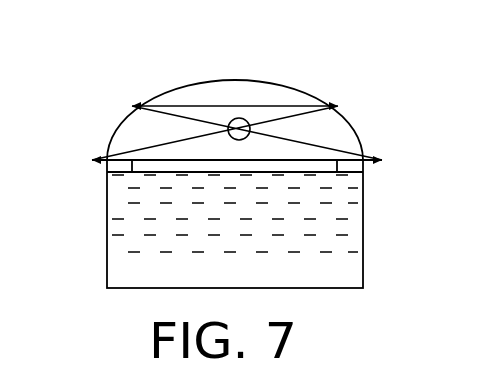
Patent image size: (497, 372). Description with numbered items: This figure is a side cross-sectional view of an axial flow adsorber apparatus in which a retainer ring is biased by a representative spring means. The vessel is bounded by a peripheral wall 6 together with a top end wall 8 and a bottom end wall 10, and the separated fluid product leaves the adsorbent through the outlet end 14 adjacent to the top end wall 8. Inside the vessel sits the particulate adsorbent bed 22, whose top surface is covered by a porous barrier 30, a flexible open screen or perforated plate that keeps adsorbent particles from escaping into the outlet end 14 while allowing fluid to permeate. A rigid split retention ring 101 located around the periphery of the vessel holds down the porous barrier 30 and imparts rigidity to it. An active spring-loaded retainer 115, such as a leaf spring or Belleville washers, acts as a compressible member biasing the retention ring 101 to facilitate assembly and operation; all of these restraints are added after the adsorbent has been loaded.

The bottom end wall 10 is at (345, 288).
The outlet end 14 is at (271, 93).
The rigid split retention ring 101 is at (100, 169).
The porous barrier 30 is at (143, 169).
The top end wall 8 is at (168, 92).
The spring-loaded retainer 115 is at (301, 100).
The peripheral wall 6 is at (106, 233).
The particulate adsorbent bed 22 is at (130, 228).